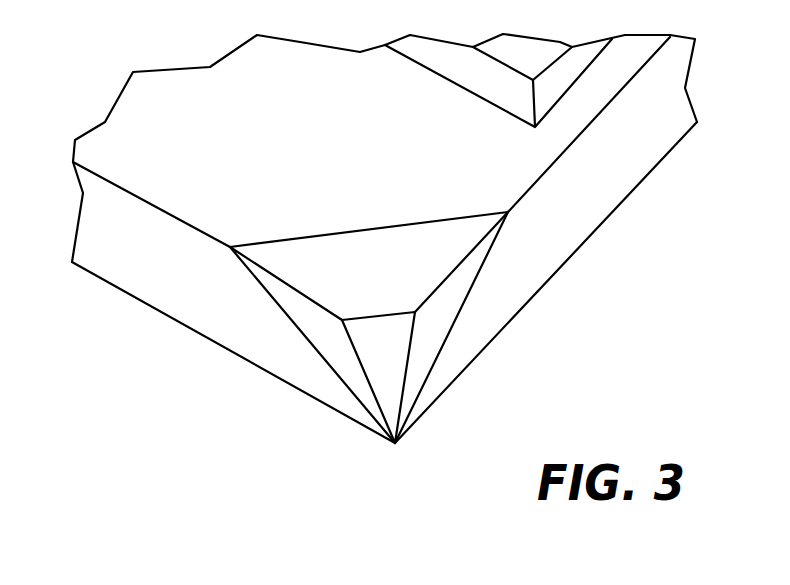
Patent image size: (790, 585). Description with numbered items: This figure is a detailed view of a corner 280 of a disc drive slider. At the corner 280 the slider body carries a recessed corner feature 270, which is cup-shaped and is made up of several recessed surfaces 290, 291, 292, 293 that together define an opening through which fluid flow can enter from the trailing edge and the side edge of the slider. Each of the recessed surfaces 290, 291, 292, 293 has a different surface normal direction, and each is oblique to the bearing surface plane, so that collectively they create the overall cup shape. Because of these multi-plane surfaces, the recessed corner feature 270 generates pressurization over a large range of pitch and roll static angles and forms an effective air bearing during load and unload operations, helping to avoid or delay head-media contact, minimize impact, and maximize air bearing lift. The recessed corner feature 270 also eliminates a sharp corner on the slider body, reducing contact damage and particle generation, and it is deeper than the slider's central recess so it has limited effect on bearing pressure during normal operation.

The recessed corner feature 270 is at (498, 269).
The corner 280 is at (397, 445).
The recessed surface 290 is at (350, 248).
The recessed surface 291 is at (300, 305).
The recessed surface 292 is at (435, 318).
The recessed surface 293 is at (378, 340).